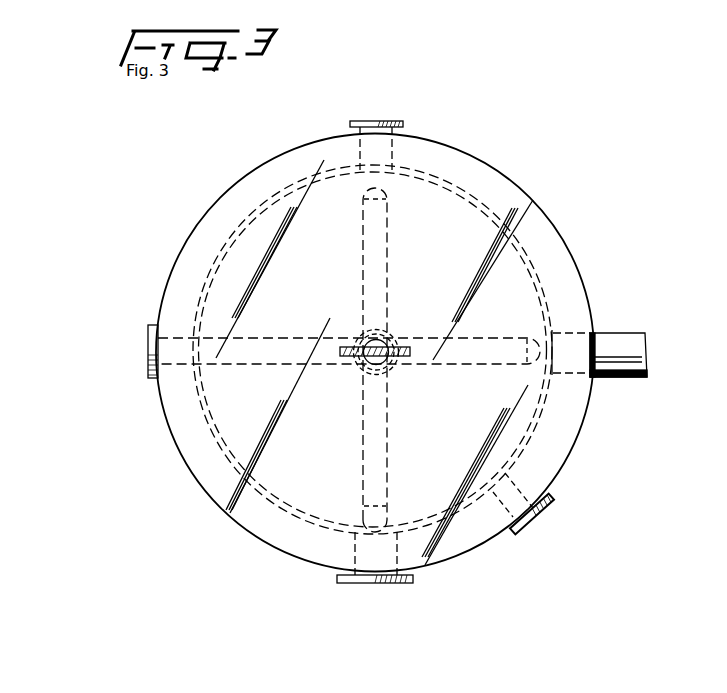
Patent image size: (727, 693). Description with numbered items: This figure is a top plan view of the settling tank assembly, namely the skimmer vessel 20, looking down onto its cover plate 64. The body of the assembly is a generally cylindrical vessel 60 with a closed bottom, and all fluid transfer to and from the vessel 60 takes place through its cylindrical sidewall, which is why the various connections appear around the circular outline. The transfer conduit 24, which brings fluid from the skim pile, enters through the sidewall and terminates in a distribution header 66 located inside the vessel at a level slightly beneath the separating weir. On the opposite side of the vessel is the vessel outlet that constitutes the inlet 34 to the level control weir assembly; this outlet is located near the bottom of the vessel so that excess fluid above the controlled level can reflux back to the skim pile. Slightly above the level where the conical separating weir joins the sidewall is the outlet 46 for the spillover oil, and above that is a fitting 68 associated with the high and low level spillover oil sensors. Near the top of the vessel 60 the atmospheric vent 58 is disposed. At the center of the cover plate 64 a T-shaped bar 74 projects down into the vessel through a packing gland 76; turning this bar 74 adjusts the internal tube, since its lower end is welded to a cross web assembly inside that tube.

The skimmer vessel 20 is at (560, 104).
The transfer conduit 24 is at (153, 337).
The inlet to level control weir 34 is at (567, 334).
The outlet for spillover oil 46 is at (552, 502).
The atmospheric vent 58 is at (392, 122).
The cylindrical vessel 60 is at (365, 447).
The cover plate 64 is at (258, 195).
The distribution header 66 is at (255, 342).
The fitting for spillover oil sensors 68 is at (353, 580).
The T-shaped bar 74 is at (412, 350).
The packing gland 76 is at (385, 331).